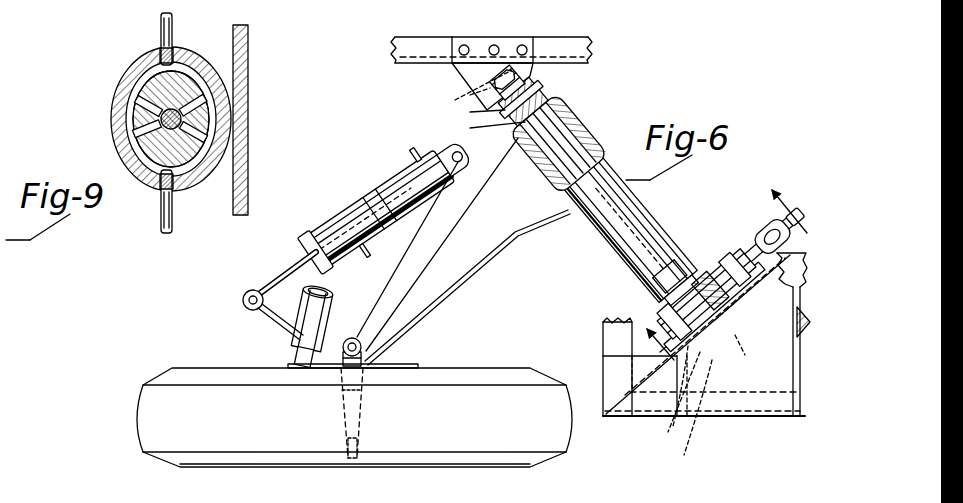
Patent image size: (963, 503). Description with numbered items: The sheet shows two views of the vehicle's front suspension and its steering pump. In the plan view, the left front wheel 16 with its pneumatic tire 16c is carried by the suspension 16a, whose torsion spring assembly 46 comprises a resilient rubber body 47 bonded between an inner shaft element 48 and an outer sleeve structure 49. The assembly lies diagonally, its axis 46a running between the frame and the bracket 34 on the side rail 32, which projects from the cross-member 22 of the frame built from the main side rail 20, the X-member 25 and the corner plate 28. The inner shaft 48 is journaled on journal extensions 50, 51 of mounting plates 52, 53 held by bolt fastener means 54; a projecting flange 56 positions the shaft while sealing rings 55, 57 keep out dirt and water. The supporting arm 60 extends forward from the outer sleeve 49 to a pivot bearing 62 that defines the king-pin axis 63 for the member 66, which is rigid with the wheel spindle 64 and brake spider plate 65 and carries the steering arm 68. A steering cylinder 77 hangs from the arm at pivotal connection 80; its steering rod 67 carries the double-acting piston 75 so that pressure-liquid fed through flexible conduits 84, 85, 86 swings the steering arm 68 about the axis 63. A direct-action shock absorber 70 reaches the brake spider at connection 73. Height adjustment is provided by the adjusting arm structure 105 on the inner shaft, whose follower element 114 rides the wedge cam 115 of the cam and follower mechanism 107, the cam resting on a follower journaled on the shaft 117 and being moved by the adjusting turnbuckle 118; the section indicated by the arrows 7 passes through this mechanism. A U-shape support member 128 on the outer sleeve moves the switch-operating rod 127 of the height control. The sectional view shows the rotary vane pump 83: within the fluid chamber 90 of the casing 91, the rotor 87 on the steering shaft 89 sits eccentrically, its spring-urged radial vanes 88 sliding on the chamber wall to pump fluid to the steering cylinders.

In FIG. 9, the flexible conduit 85 is at (160, 30).
In FIG. 9, the fluid chamber 90 is at (200, 77).
In FIG. 9, the casing 91 is at (122, 73).
In FIG. 9, the pump 83 is at (118, 103).
In FIG. 9, the shaft 89 is at (162, 120).
In FIG. 9, the rotor 87 is at (128, 158).
In FIG. 9, the radial vanes 88 is at (218, 116).
In FIG. 9, the flexible conduit 84 is at (175, 226).
In FIG. 6, the flexible conduit 84 is at (352, 265).
In FIG. 6, the side rail 32 is at (412, 42).
In FIG. 6, the bracket 34 is at (470, 81).
In FIG. 6, the bolt fastener means 54 is at (672, 448).
In FIG. 6, the projecting flange 56 is at (473, 112).
In FIG. 6, the sealing ring 55 is at (483, 128).
In FIG. 6, the mounting plate 52 is at (535, 86).
In FIG. 6, the journal extension 50 is at (545, 110).
In FIG. 6, the outer sleeve structure 49 is at (566, 112).
In FIG. 6, the body of resilient rubber 47 is at (570, 120).
In FIG. 6, the inner shaft element 48 is at (598, 150).
In FIG. 6, the flexible conduit 86 is at (414, 146).
In FIG. 6, the double-acting piston 75 is at (402, 174).
In FIG. 6, the cylinder 77 is at (368, 206).
In FIG. 6, the pivotal connection 80 is at (470, 175).
In FIG. 6, the steering rod 67 is at (310, 254).
In FIG. 6, the direct-action shock absorber 70 is at (312, 304).
In FIG. 6, the steering arm 68 is at (273, 326).
In FIG. 6, the connection 73 is at (292, 358).
In FIG. 6, the king-pin axis 63 is at (352, 338).
In FIG. 6, the pivot bearing 62 is at (390, 330).
In FIG. 6, the member 66 is at (375, 352).
In FIG. 6, the brake spider plate 65 is at (400, 366).
In FIG. 6, the supporting arm 60 is at (455, 282).
In FIG. 6, the torsion spring assembly 46 is at (595, 226).
In FIG. 6, the axis 46a is at (612, 255).
In FIG. 6, the journal extension 51 is at (636, 272).
In FIG. 6, the adjusting arm structure 105 is at (645, 290).
In FIG. 6, the suspension 16a is at (553, 252).
In FIG. 6, the cam and follower mechanism 107 is at (738, 253).
In FIG. 6, the rotatable follower element 114 is at (734, 266).
In FIG. 6, the cam 115 is at (742, 292).
In FIG. 6, the adjusting turnbuckle 118 is at (778, 250).
In FIG. 6, the section line 7- 7 is at (719, 268).
In FIG. 6, the cross-member 22 is at (603, 340).
In FIG. 6, the shaft 117 is at (748, 303).
In FIG. 6, the sealing ring 57 is at (725, 330).
In FIG. 6, the mounting plate 53 is at (675, 426).
In FIG. 6, the X-member 25 is at (679, 417).
In FIG. 6, the corner plate 28 is at (736, 400).
In FIG. 6, the main side rail 20 is at (800, 425).
In FIG. 6, the pneumatic tire 16c is at (192, 444).
In FIG. 6, the front wheel 16 is at (228, 470).
In FIG. 6, the wheel spindle 64 is at (342, 428).
In FIG. 6, the U-shape support member 128 is at (432, 496).
In FIG. 6, the switch-operating rod 127 is at (549, 496).